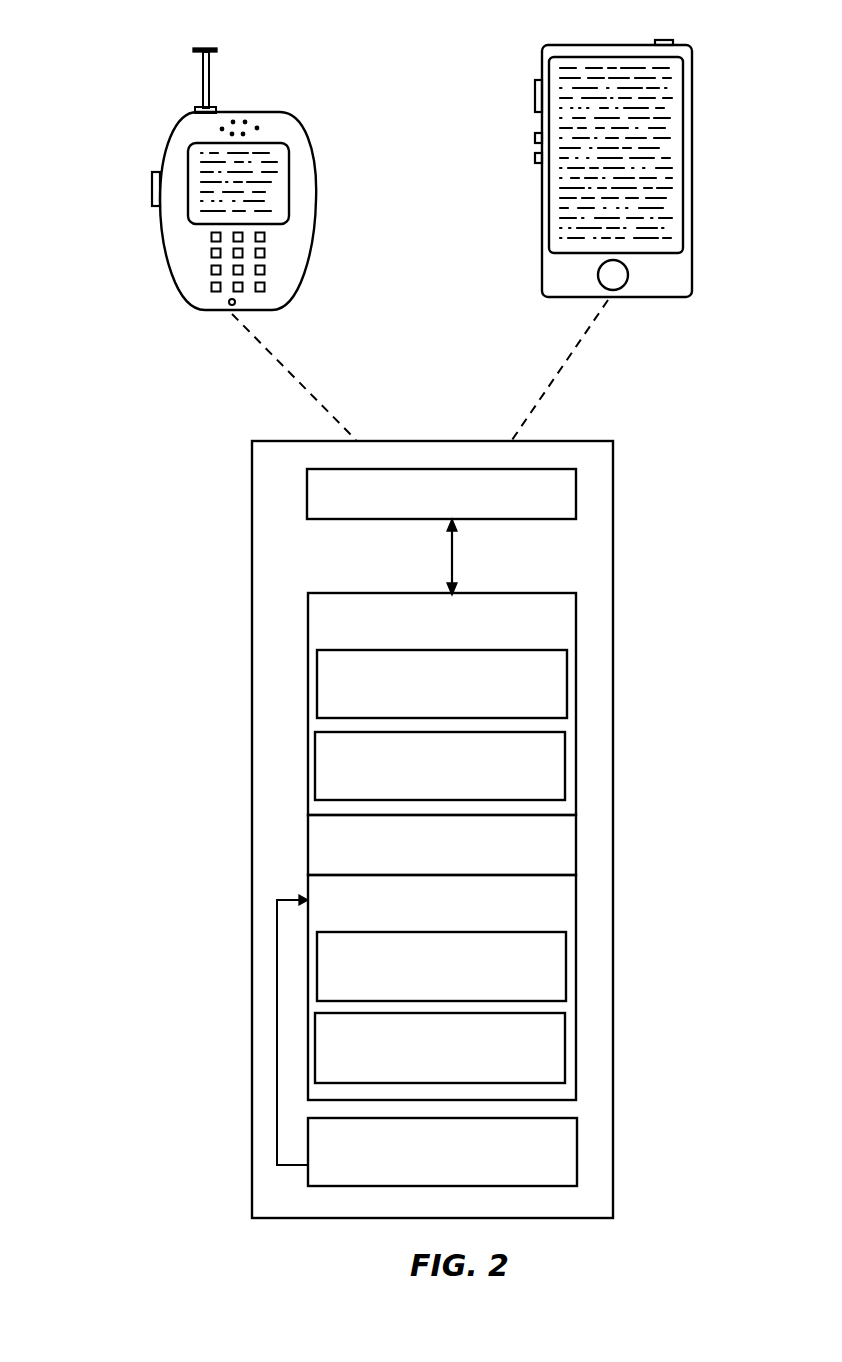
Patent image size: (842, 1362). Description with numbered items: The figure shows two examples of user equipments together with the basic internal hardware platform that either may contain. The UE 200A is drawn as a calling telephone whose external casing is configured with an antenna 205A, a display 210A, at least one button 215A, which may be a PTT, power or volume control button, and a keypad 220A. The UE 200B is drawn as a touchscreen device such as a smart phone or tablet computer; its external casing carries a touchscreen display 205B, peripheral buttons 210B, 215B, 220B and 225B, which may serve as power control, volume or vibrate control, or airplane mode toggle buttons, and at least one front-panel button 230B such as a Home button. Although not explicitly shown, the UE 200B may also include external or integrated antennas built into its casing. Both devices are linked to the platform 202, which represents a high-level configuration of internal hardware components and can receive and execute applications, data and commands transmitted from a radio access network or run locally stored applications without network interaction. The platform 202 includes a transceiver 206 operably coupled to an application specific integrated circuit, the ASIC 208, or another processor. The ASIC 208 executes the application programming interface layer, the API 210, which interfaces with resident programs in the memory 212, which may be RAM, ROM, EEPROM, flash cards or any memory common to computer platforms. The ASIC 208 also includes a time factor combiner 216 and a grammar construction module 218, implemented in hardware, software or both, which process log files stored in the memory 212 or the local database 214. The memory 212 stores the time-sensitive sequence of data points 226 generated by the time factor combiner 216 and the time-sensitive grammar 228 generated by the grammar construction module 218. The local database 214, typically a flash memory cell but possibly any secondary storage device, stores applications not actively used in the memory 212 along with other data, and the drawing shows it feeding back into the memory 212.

The UE 200A is at (298, 288).
The antenna 205A is at (210, 70).
The display 210A is at (289, 182).
The button 215A is at (152, 190).
The keypad 220A is at (265, 253).
The UE 200B is at (580, 45).
The touchscreen display 205B is at (692, 78).
The peripheral button 210B is at (664, 40).
The peripheral button 215B is at (534, 97).
The peripheral button 220B is at (534, 139).
The peripheral button 225B is at (534, 158).
The front-panel button 230B is at (598, 275).
The platform 202 is at (270, 441).
The transceiver 206 is at (576, 492).
The application specific integrated circuit (ASIC) 208 is at (576, 618).
The time factor combiner 216 is at (567, 683).
The grammar construction module 218 is at (565, 767).
The application programming interface (API) 210 is at (576, 842).
The memory 212 is at (576, 897).
The time-sensitive sequence of data points 226 is at (566, 965).
The time-sensitive grammar 228 is at (565, 1045).
The local database 214 is at (577, 1150).